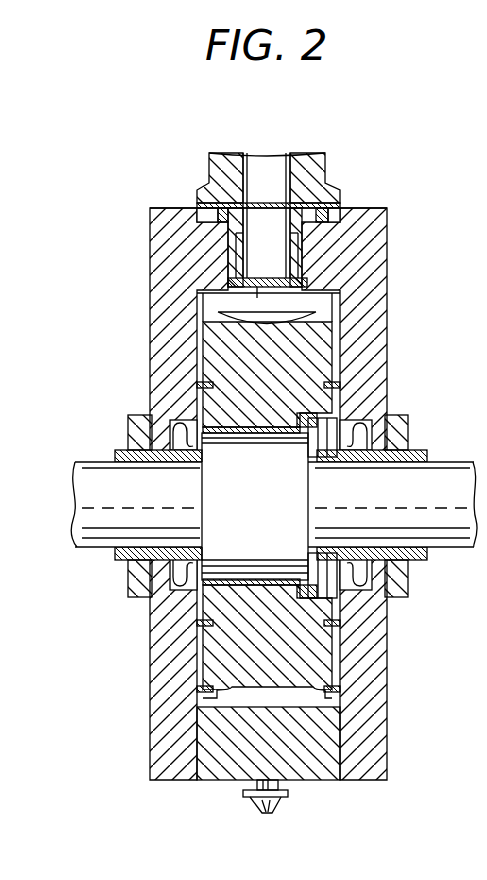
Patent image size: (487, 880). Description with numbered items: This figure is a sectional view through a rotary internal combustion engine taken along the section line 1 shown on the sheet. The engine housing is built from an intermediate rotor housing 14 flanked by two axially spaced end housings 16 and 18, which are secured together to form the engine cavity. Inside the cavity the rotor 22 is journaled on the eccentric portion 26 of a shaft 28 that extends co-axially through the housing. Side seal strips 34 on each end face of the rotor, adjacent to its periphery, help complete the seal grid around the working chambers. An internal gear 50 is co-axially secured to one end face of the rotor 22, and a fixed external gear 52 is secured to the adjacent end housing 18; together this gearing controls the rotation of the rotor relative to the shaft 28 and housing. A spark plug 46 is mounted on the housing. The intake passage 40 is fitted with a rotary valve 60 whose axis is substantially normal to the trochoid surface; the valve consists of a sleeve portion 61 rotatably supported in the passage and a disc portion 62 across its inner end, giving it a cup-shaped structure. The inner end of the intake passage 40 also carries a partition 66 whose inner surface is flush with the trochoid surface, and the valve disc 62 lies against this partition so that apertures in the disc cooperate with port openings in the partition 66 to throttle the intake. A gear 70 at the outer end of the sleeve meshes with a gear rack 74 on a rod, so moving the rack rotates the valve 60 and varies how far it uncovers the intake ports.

The section line 1 is at (215, 113).
The rotor housing 14 is at (383, 235).
The end housing 16 is at (151, 225).
The end housing 18 is at (380, 348).
The rotor 22 is at (278, 393).
The eccentric portion 26 is at (262, 494).
The shaft 28 is at (455, 550).
The side seal strip 34 is at (340, 688).
The intake passage 40 is at (288, 167).
The spark plug 46 is at (277, 806).
The internal gear 50 is at (330, 425).
The fixed external gear 52 is at (337, 444).
The rotary valve 60 is at (282, 195).
The sleeve portion 61 is at (240, 256).
The disc portion 62 is at (278, 272).
The partition 66 is at (274, 294).
The gear 70 is at (216, 217).
The gear rack 74 is at (335, 216).